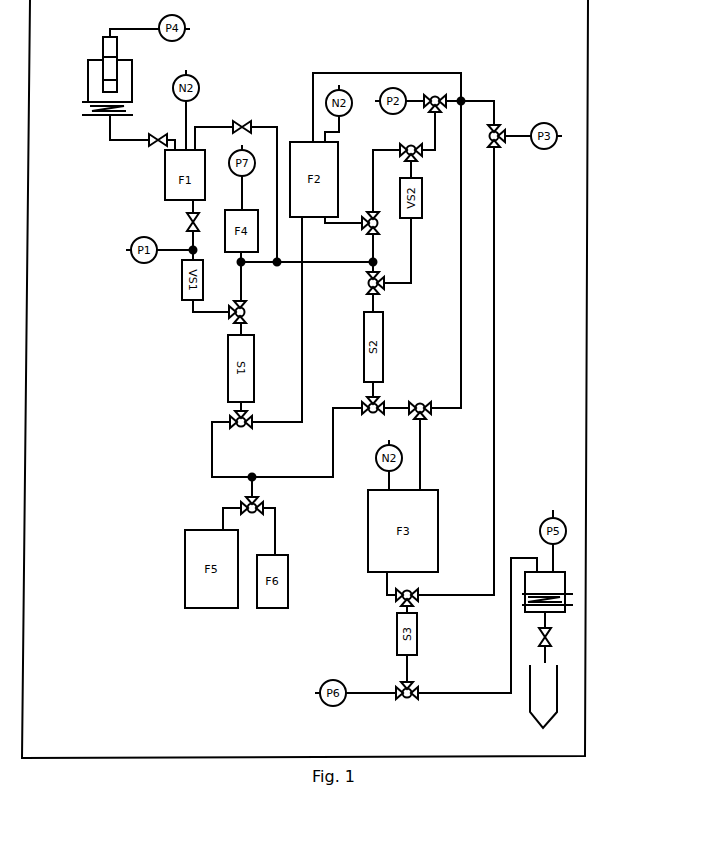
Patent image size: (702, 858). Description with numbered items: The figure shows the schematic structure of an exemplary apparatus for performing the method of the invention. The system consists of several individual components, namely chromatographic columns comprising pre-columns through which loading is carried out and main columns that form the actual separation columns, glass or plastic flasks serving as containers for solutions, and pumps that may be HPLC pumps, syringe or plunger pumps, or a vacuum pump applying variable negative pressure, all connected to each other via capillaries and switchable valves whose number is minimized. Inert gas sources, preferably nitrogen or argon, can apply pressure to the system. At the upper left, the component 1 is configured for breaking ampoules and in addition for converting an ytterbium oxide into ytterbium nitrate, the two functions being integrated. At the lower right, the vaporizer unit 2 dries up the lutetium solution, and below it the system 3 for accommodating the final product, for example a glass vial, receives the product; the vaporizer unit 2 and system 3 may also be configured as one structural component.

The ampoule breaking and conversion component 1 is at (102, 76).
The vaporizer unit 2 is at (552, 617).
The system for accommodating the final product 3 is at (550, 696).